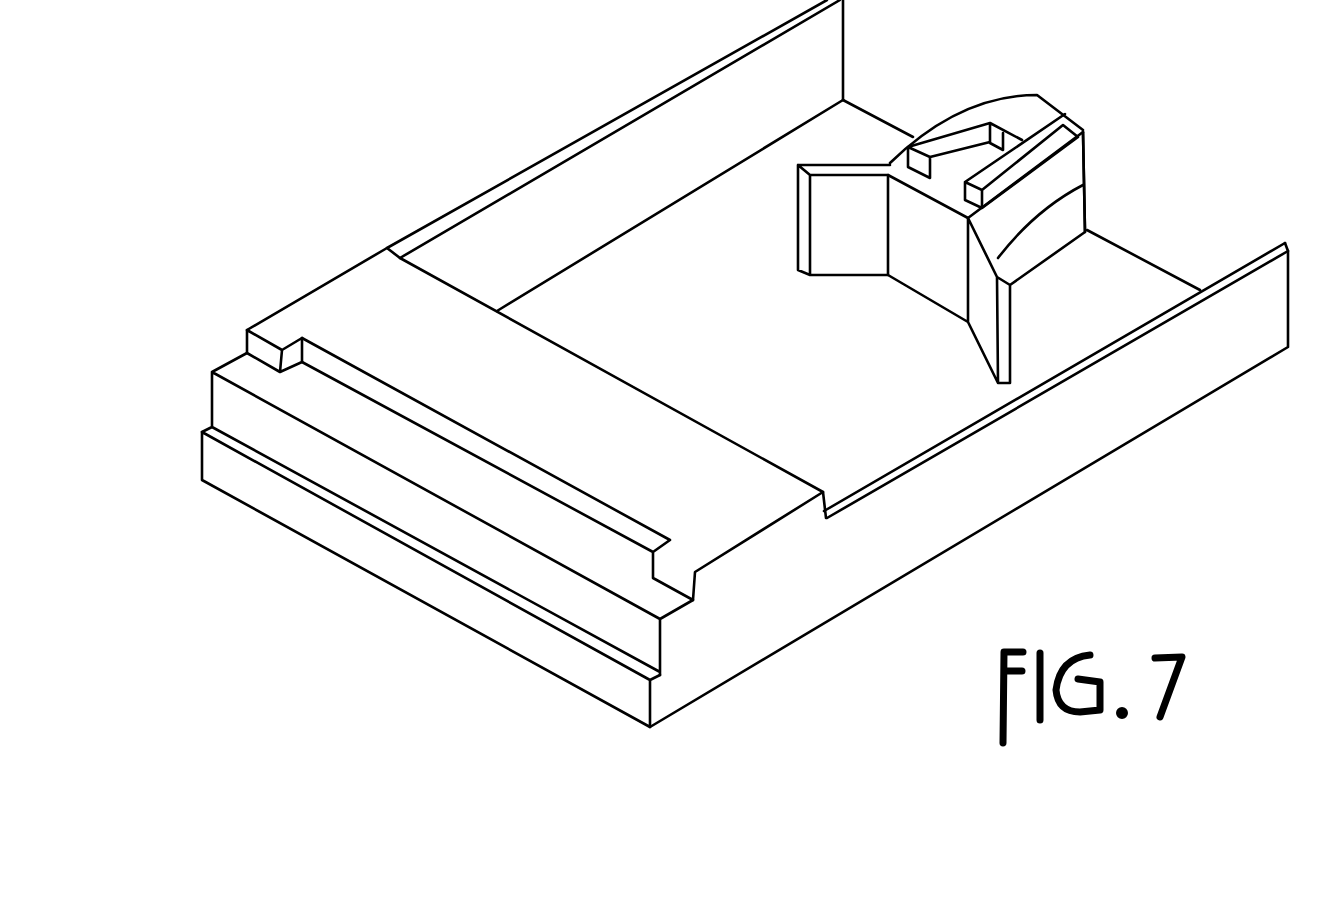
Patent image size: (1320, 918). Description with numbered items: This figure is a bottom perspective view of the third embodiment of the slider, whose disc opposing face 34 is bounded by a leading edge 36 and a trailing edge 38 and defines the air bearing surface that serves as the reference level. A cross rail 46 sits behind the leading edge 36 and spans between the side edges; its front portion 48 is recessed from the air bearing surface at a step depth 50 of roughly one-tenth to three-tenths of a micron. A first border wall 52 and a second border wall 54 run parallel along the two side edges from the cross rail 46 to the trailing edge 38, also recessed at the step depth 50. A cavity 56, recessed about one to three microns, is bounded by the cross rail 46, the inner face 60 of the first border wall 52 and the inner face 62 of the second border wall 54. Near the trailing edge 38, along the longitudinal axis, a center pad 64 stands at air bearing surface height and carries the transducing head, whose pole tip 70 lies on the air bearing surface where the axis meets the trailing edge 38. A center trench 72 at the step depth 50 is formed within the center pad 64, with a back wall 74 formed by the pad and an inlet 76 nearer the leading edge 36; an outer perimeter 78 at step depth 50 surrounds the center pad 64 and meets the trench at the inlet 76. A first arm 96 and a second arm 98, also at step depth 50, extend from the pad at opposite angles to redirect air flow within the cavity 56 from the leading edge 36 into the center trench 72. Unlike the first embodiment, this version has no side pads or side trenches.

The disc opposing face 34 is at (368, 292).
The leading edge 36 is at (430, 498).
The trailing edge 38 is at (1090, 228).
The cross rail 46 is at (180, 362).
The front portion 48 is at (317, 405).
The step depth 50 is at (703, 574).
The first border wall 52 is at (558, 165).
The second border wall 54 is at (993, 417).
The cavity 56 is at (607, 135).
The inner face 60 is at (640, 133).
The inner face 62 is at (928, 441).
The center pad 64 is at (933, 191).
The pole tip 70 is at (1047, 97).
The center trench 72 is at (977, 161).
The back wall 74 is at (1008, 143).
The inlet 76 is at (943, 181).
The outer perimeter 78 is at (1072, 132).
The first arm 96 is at (822, 217).
The second arm 98 is at (1080, 194).